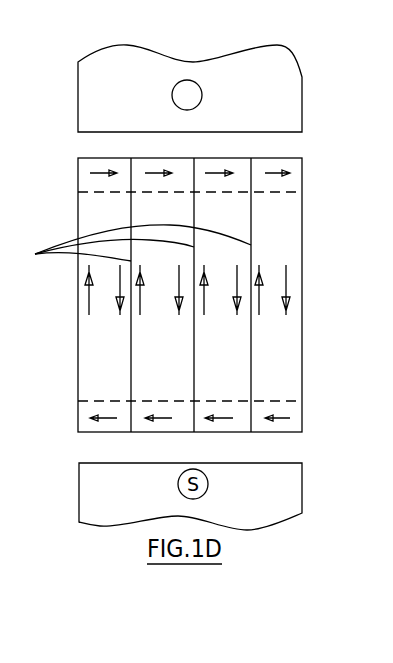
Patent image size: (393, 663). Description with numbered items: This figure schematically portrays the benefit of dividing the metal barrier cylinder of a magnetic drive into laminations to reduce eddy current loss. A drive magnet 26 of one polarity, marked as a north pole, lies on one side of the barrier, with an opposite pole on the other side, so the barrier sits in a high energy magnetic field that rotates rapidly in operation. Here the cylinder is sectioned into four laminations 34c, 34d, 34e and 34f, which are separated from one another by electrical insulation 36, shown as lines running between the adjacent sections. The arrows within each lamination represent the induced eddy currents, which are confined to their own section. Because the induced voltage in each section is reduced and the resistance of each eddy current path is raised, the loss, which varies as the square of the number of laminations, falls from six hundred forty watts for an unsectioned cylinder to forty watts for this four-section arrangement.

The drive magnets 26 is at (123, 92).
The lamination 34c is at (103, 211).
The lamination 34d is at (160, 347).
The lamination 34e is at (226, 205).
The lamination 34f is at (287, 348).
The electrical insulation 36 is at (128, 249).